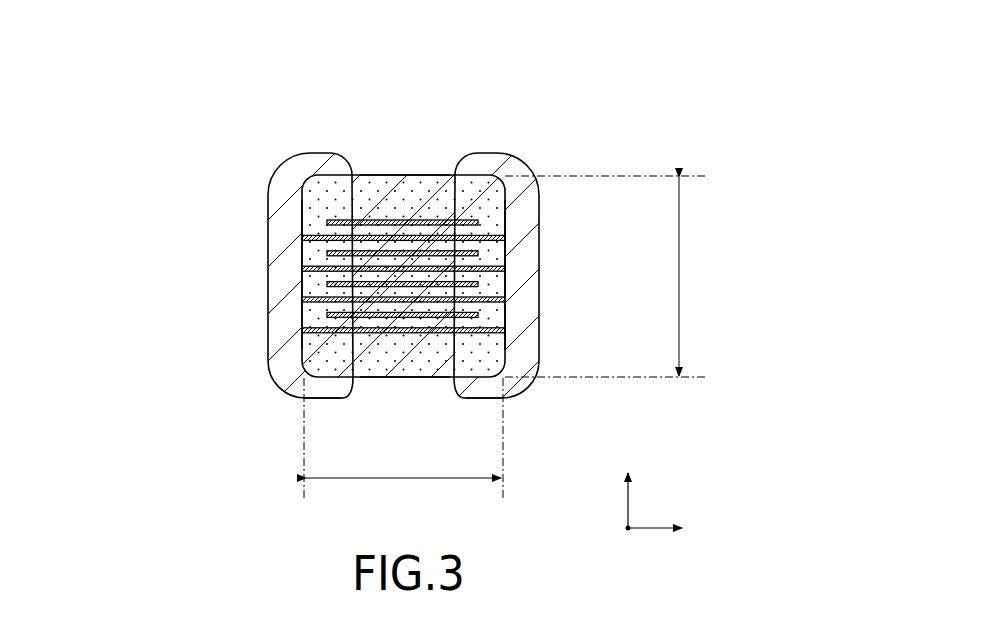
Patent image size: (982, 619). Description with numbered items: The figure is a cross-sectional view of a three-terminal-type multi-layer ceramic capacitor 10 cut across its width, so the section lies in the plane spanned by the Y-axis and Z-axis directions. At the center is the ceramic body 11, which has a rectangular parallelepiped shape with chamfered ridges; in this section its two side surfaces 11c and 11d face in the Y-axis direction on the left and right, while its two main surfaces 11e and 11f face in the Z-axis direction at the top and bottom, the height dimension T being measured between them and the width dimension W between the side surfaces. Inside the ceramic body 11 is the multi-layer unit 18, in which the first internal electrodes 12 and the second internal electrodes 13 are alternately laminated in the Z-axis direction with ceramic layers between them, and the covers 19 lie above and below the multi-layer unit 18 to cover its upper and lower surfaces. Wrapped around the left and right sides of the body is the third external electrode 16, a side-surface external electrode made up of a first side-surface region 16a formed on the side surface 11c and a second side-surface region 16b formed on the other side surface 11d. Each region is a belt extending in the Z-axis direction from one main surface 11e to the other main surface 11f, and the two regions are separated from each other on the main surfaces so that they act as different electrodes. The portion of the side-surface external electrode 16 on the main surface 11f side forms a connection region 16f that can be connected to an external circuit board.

The multi-layer ceramic capacitor 10 is at (248, 68).
The ceramic body 11 is at (368, 381).
The side surface 11c is at (302, 281).
The side surface 11d is at (505, 283).
The main surface 11e is at (403, 174).
The main surface 11f is at (438, 379).
The first internal electrodes 12 is at (372, 313).
The second internal electrodes 13 is at (455, 329).
The third external electrode 16 is at (424, 312).
The first side-surface region 16a is at (282, 163).
The second side-surface region 16b is at (512, 164).
The connection region 16f is at (315, 404).
The multi-layer unit 18 is at (417, 288).
The covers 19 is at (417, 210).